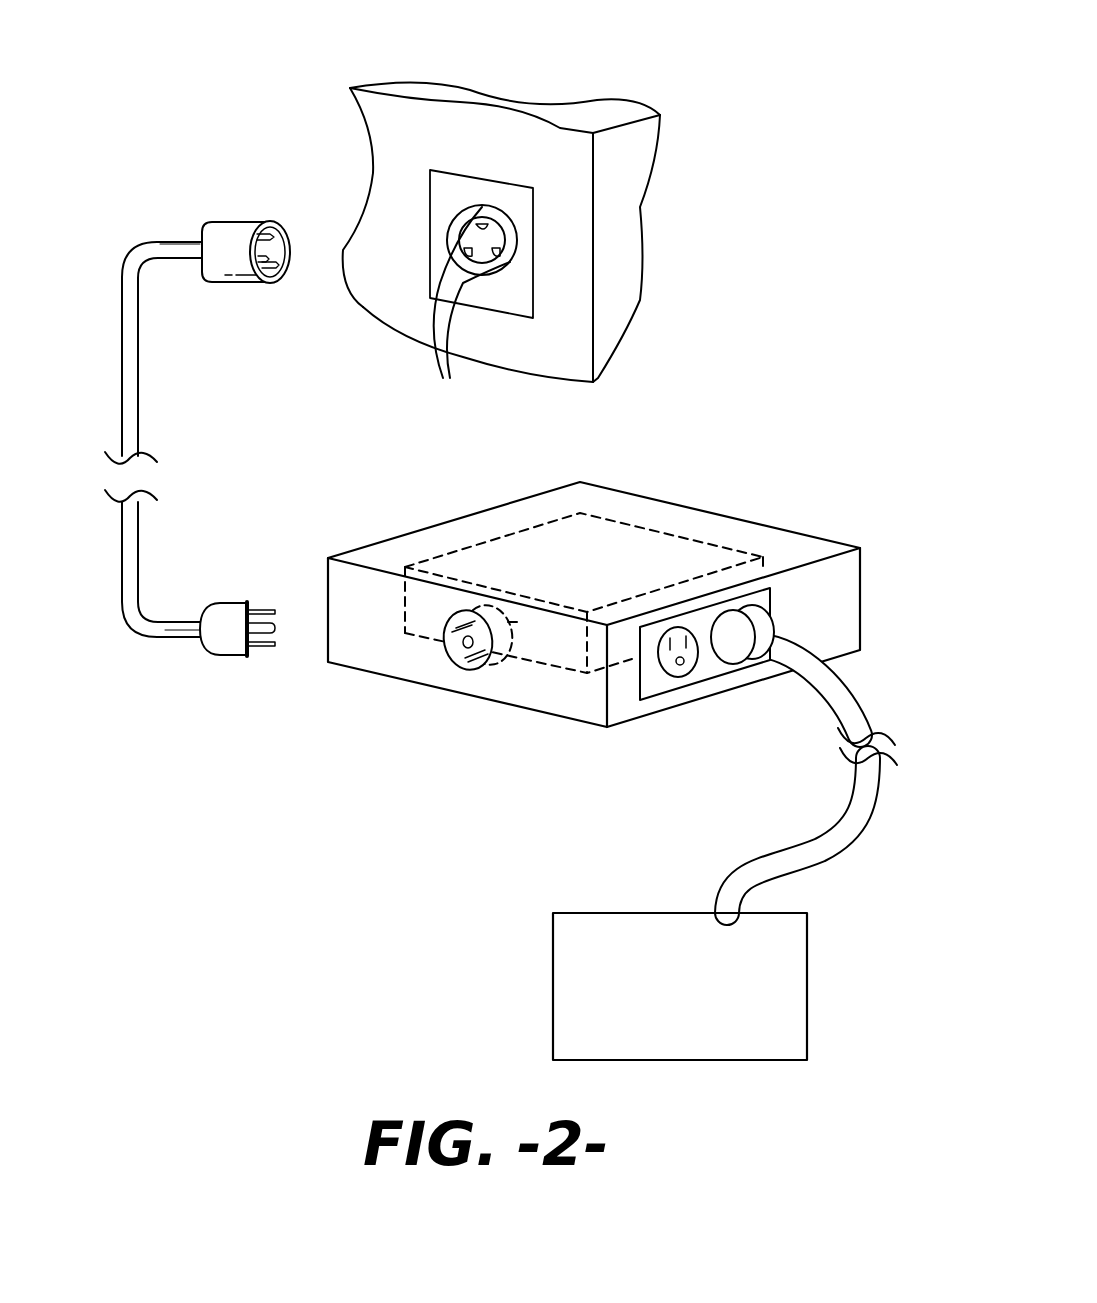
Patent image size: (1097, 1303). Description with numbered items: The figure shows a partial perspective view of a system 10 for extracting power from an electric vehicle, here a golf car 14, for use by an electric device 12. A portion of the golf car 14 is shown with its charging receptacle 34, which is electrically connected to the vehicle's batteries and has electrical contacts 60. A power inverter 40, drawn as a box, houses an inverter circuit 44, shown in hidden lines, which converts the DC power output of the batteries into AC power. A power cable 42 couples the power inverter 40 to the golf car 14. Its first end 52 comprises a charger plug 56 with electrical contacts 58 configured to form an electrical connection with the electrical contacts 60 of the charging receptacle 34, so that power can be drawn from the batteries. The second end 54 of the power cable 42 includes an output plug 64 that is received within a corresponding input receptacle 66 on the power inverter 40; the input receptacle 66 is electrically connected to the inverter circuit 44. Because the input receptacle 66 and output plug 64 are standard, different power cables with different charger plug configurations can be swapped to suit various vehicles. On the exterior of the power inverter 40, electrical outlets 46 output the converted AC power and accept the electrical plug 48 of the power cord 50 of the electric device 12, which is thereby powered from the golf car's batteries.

The system 10 is at (744, 90).
The electric device 12 is at (659, 1001).
The golf car 14 is at (393, 77).
The charging receptacle 34 is at (482, 205).
The power inverter 40 is at (690, 508).
The power cable 42 is at (139, 354).
The inverter circuit 44 is at (505, 537).
The electrical outlets 46 is at (688, 652).
The electrical plug 48 is at (732, 623).
The power cord 50 is at (842, 820).
The first end 52 is at (178, 240).
The second end 54 is at (170, 637).
The charger plug 56 is at (243, 222).
The electrical contacts 58 is at (283, 247).
The electrical contacts 60 is at (472, 308).
The output plug 64 is at (235, 657).
The input receptacle 66 is at (453, 655).